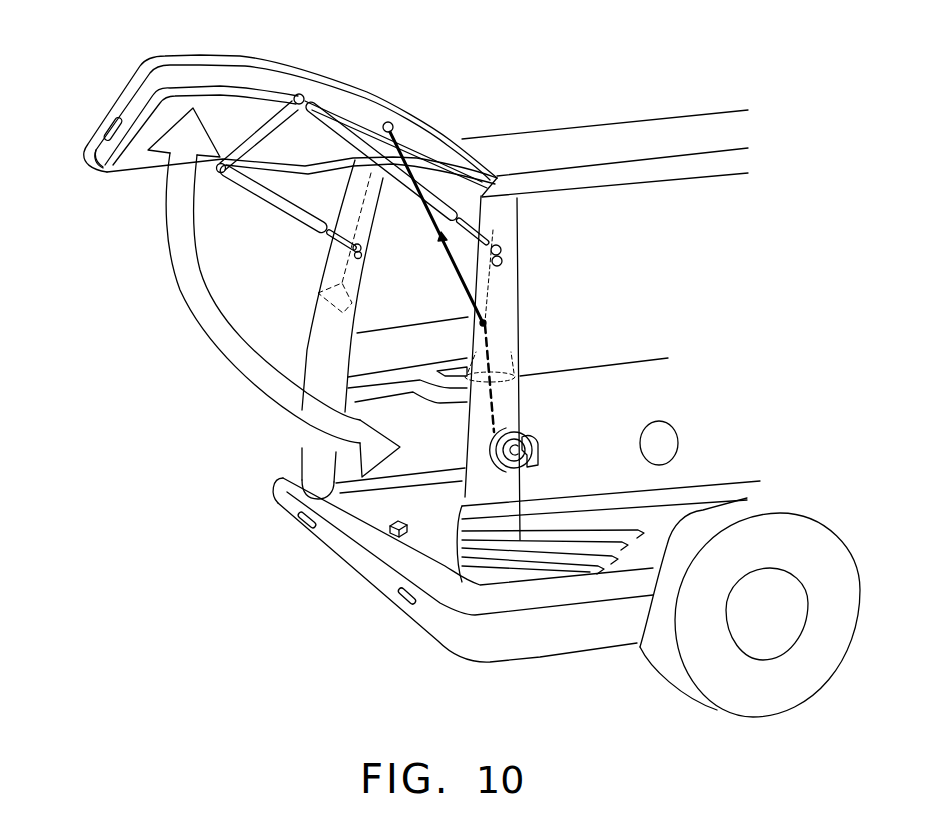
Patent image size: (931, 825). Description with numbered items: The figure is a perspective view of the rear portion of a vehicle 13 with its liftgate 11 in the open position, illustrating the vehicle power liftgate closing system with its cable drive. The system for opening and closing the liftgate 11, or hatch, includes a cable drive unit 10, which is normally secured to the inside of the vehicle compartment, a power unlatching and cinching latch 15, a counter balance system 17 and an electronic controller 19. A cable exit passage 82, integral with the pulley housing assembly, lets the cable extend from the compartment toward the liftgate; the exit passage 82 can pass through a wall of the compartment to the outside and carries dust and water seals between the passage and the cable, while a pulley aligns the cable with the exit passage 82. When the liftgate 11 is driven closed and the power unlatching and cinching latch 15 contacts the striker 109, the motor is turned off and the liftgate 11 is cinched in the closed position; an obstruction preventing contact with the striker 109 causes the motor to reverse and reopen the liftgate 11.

The cable drive unit 10 is at (510, 427).
The liftgate 11 is at (370, 91).
The vehicle 13 is at (638, 121).
The power unlatching and cinching latch 15 is at (100, 123).
The counter balance system 17 is at (272, 208).
The electronic controller 19 is at (538, 453).
The cable exit passage 82 is at (485, 323).
The striker 109 is at (390, 522).